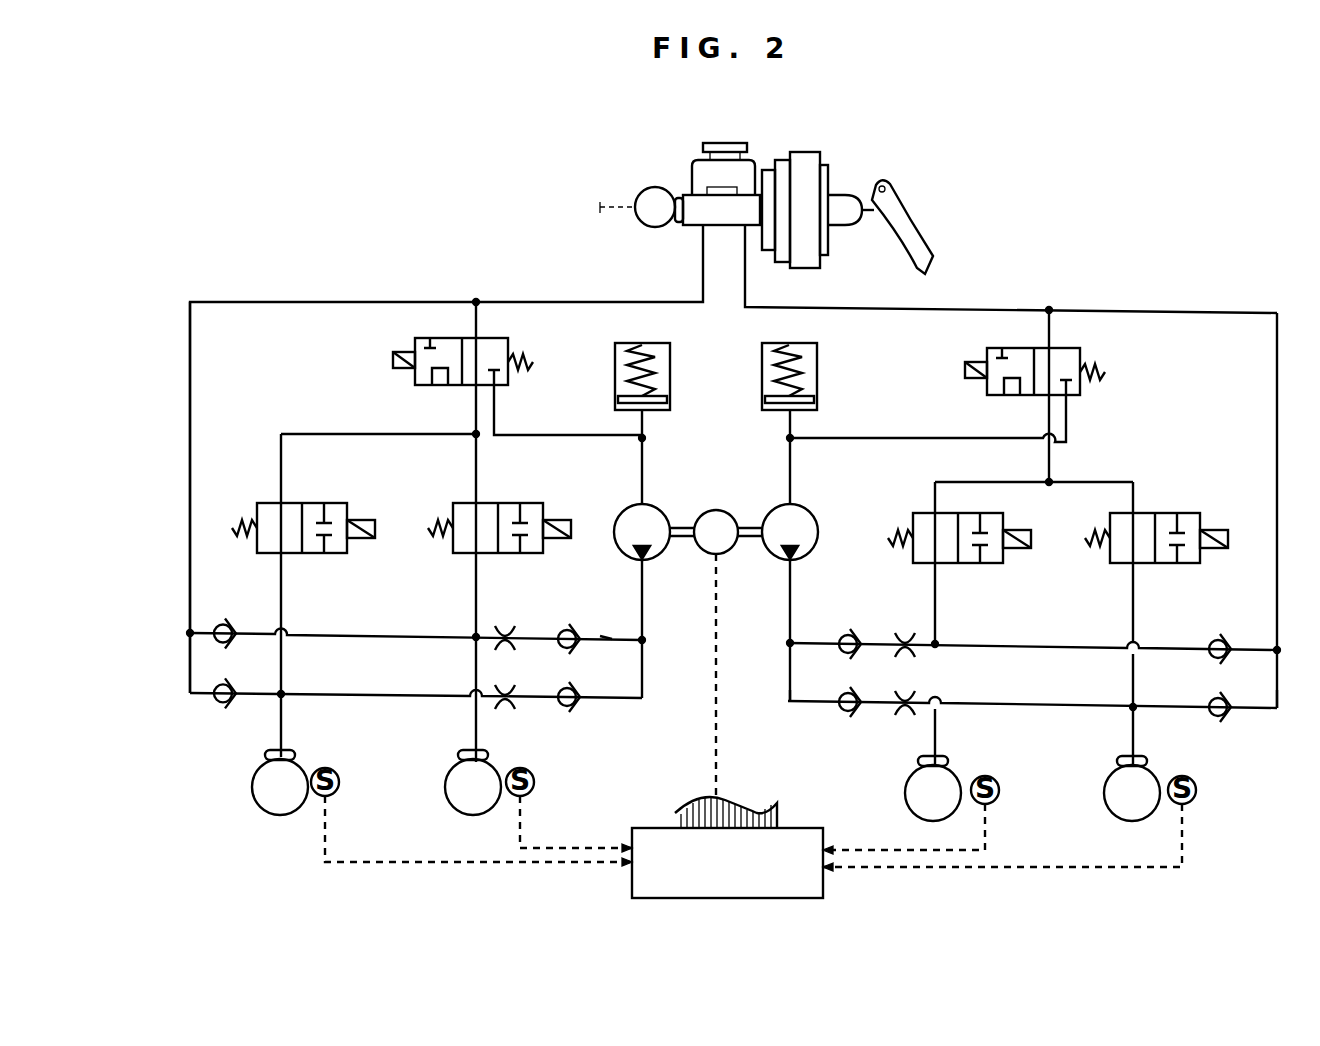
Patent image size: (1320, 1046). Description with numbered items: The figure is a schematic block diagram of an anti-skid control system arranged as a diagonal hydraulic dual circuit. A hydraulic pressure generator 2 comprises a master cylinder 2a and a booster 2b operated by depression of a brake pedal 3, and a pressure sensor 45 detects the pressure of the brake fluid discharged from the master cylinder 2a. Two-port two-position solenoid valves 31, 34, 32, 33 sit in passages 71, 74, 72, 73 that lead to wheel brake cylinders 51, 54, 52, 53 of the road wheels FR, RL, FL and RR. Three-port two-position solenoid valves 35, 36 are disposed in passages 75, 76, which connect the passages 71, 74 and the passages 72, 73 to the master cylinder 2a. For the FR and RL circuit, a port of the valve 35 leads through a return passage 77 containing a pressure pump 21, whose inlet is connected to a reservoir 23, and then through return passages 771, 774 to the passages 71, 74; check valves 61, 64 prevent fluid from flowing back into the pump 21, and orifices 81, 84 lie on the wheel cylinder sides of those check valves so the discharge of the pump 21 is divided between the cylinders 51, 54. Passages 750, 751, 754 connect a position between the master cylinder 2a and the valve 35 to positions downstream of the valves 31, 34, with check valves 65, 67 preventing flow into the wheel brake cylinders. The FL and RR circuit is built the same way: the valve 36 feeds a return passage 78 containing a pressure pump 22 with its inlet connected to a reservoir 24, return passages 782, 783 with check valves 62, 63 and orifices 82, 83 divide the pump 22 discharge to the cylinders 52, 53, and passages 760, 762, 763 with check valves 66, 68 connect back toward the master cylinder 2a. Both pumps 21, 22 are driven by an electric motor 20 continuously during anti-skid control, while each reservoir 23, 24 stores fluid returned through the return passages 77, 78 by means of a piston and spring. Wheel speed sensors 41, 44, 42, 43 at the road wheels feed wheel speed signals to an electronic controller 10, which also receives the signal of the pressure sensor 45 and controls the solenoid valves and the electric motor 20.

The hydraulic pressure generator 2 is at (683, 163).
The master cylinder 2a is at (698, 220).
The booster 2b is at (806, 160).
The brake pedal 3 is at (897, 237).
The pressure sensor 45 is at (640, 190).
The passage 750 is at (371, 302).
The passage 75 is at (546, 302).
The three-port two-position solenoid operated changeover valve 35 is at (418, 386).
The return passage 77 is at (548, 435).
The reservoir 23 is at (671, 371).
The reservoir 24 is at (818, 371).
The three-port two-position solenoid operated changeover valve 36 is at (1082, 356).
The passage 76 is at (858, 307).
The passage 760 is at (1195, 312).
The return passage 78 is at (908, 441).
The passage 72 is at (950, 482).
The passage 73 is at (1133, 482).
The two-port two-position solenoid operated changeover valve 33 is at (1165, 513).
The two-port two-position solenoid operated changeover valve 32 is at (964, 563).
The passage 71 is at (285, 462).
The two-port two-position solenoid operated changeover valve 31 is at (340, 503).
The passage 74 is at (478, 468).
The two-port two-position solenoid operated changeover valve 34 is at (535, 503).
The pressure pump 21 is at (650, 505).
The electric motor 20 is at (723, 510).
The pressure pump 22 is at (806, 505).
The passage 754 is at (191, 580).
The return passage 771 is at (366, 694).
The passage 751 is at (184, 680).
The check valve 67 is at (233, 645).
The check valve 65 is at (229, 705).
The orifice 84 is at (505, 626).
The check valve 64 is at (568, 625).
The return passage 774 is at (607, 637).
The orifice 81 is at (505, 712).
The check valve 61 is at (568, 712).
The passage 762 is at (1057, 647).
The return passage 782 is at (808, 642).
The return passage 783 is at (789, 706).
The passage 763 is at (1278, 714).
The check valve 62 is at (852, 632).
The orifice 82 is at (905, 632).
The check valve 66 is at (1225, 638).
The check valve 63 is at (850, 714).
The orifice 83 is at (905, 716).
The check valve 68 is at (1220, 720).
The wheel brake cylinder 51 is at (283, 756).
The wheel speed sensor 41 is at (340, 779).
The wheel brake cylinder 54 is at (467, 760).
The wheel speed sensor 44 is at (527, 795).
The wheel brake cylinder 52 is at (942, 764).
The wheel speed sensor 42 is at (993, 800).
The wheel brake cylinder 53 is at (1140, 760).
The wheel speed sensor 43 is at (1186, 805).
The electronic controller 10 is at (810, 828).